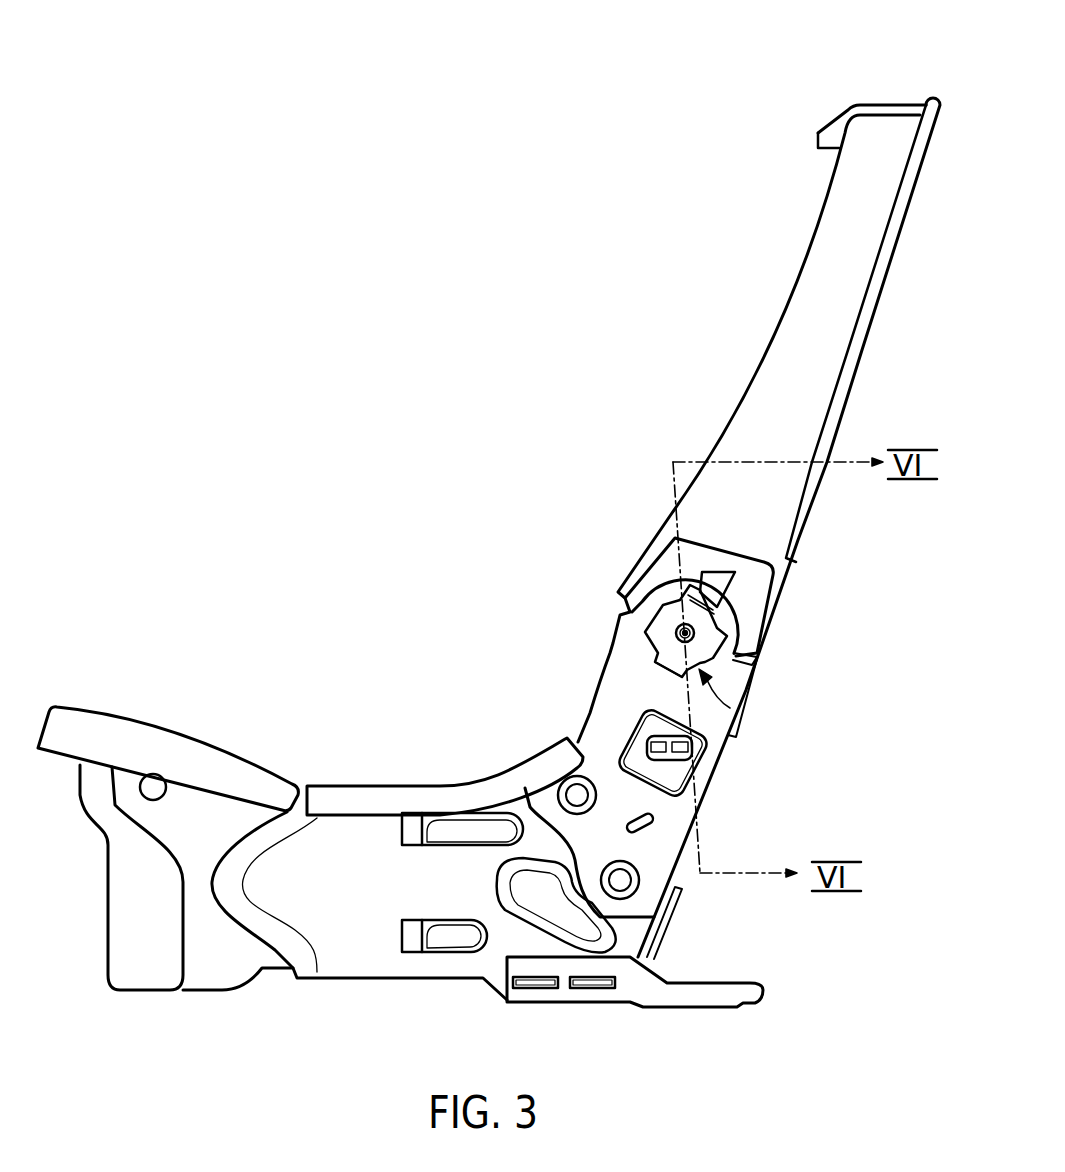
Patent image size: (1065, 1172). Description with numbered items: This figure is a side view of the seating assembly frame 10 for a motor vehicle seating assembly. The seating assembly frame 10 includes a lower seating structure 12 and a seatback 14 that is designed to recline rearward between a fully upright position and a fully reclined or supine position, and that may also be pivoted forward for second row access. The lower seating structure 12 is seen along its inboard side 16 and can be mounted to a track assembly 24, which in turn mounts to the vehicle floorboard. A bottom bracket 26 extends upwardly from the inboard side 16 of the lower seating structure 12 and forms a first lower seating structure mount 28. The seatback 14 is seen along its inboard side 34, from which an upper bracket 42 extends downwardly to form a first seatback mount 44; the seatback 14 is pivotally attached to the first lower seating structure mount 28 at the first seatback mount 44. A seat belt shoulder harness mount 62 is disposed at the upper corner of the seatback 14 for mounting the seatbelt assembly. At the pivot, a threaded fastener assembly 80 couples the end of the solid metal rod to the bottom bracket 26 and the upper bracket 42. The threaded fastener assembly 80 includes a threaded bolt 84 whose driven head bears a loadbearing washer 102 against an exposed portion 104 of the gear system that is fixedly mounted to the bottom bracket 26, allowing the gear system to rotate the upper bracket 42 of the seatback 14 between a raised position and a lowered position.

The seating assembly frame 10 is at (599, 146).
The lower seating structure 12 is at (343, 958).
The seatback 14 is at (847, 300).
The inboard side 16 is at (222, 970).
The track assembly 24 is at (678, 992).
The bottom bracket 26 is at (720, 750).
The first lower seating structure mount 28 is at (738, 650).
The inboard side 34 is at (890, 185).
The upper bracket 42 is at (745, 578).
The first seatback mount 44 is at (765, 537).
The seat belt shoulder harness mount 62 is at (836, 135).
The threaded fastener assembly 80 is at (758, 668).
The threaded bolt 84 is at (690, 628).
The loadbearing washer 102 is at (700, 645).
The exposed portion 104 is at (660, 648).